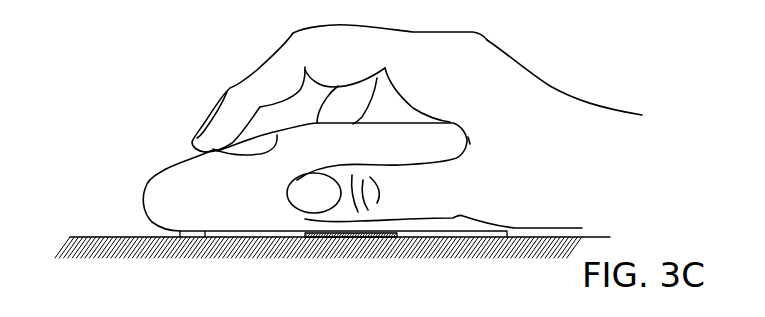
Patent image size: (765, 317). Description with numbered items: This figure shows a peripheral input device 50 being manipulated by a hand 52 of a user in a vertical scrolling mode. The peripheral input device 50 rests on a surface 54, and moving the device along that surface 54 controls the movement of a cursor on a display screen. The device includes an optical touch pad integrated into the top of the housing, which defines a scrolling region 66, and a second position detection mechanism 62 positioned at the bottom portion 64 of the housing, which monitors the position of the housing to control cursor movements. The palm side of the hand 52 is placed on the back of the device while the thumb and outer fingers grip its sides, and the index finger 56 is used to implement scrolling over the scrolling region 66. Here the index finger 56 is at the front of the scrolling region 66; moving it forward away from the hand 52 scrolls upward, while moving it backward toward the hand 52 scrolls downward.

The peripheral input device 50 is at (147, 183).
The hand 52 is at (611, 125).
The surface 54 is at (87, 237).
The index finger 56 is at (229, 90).
The second position detection mechanism 62 is at (357, 238).
The bottom portion 64 is at (204, 239).
The scrolling region 66 is at (185, 158).